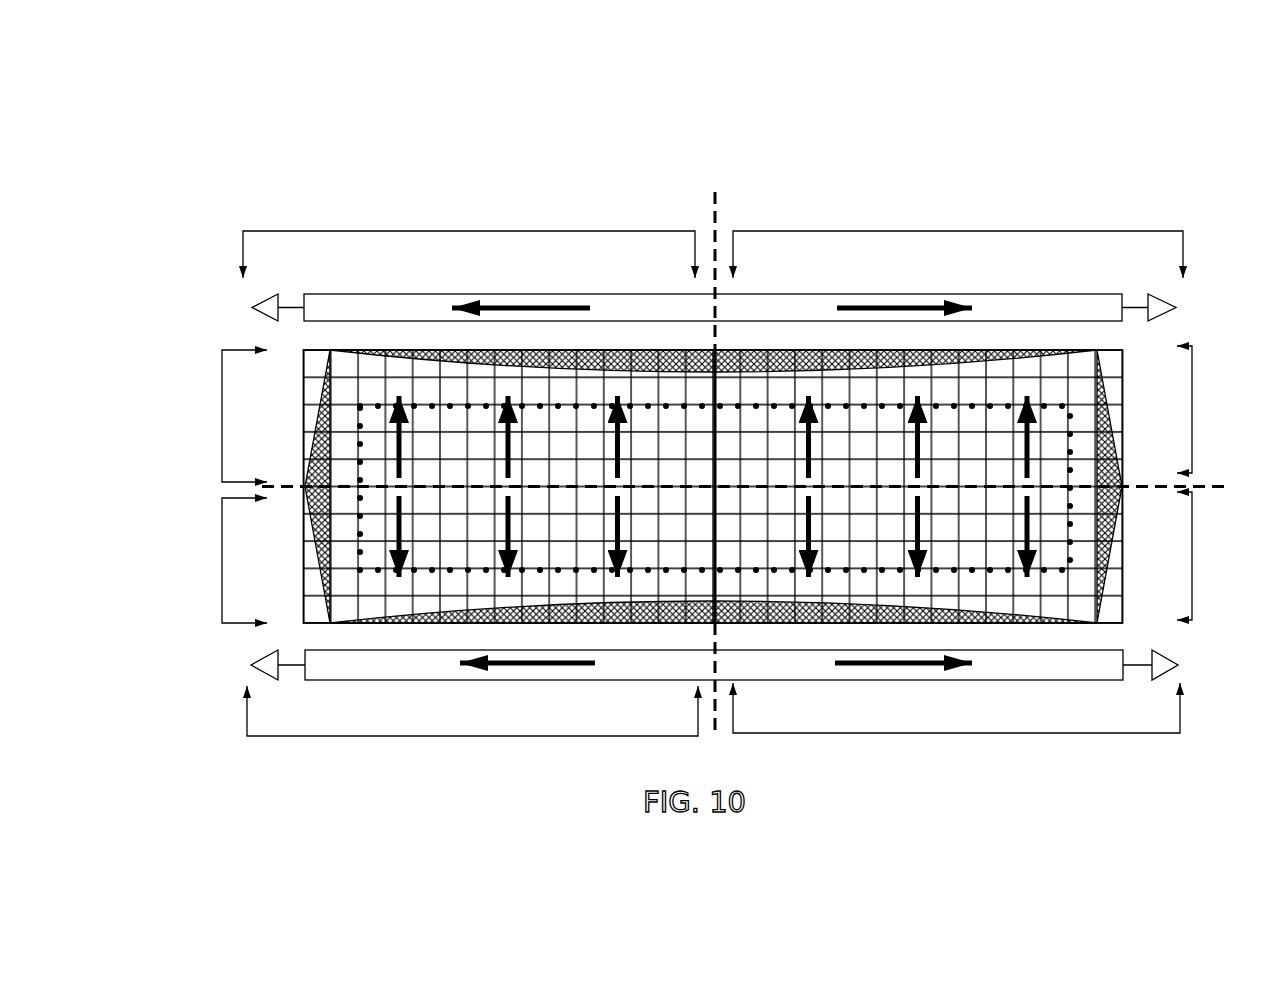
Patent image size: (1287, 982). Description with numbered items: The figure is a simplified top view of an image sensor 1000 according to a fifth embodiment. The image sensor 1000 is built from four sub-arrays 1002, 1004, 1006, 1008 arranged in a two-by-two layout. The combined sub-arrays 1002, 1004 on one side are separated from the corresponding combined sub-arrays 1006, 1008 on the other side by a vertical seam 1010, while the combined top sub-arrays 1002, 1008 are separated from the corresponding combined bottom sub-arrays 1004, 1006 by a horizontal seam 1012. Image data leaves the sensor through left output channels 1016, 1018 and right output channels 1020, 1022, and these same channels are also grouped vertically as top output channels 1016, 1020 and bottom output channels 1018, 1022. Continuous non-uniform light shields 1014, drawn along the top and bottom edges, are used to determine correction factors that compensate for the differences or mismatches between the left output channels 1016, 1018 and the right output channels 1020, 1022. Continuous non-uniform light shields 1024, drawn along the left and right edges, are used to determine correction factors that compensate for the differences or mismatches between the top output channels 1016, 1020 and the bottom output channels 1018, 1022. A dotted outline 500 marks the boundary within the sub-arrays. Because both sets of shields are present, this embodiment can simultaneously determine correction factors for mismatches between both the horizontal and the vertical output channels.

The image sensor 1000 is at (922, 122).
The sub-array 1002 is at (219, 416).
The sub-array 1004 is at (221, 560).
The sub-array 1006 is at (1209, 556).
The sub-array 1008 is at (1209, 409).
The seam 1010 is at (712, 449).
The seam 1012 is at (768, 484).
The continuous non-uniform light shields 1014 is at (740, 350).
The left output channel 1016 is at (469, 240).
The left output channel 1018 is at (472, 725).
The right output channel 1020 is at (958, 237).
The right output channel 1022 is at (956, 721).
The continuous non-uniform light shields 1024 is at (310, 473).
The mesh boundary outline 500 is at (1078, 567).